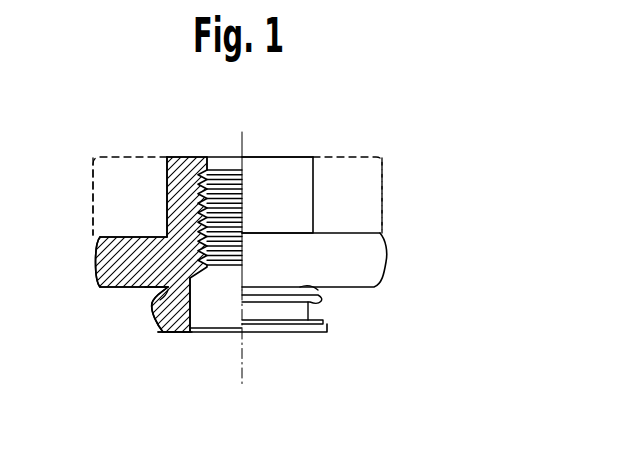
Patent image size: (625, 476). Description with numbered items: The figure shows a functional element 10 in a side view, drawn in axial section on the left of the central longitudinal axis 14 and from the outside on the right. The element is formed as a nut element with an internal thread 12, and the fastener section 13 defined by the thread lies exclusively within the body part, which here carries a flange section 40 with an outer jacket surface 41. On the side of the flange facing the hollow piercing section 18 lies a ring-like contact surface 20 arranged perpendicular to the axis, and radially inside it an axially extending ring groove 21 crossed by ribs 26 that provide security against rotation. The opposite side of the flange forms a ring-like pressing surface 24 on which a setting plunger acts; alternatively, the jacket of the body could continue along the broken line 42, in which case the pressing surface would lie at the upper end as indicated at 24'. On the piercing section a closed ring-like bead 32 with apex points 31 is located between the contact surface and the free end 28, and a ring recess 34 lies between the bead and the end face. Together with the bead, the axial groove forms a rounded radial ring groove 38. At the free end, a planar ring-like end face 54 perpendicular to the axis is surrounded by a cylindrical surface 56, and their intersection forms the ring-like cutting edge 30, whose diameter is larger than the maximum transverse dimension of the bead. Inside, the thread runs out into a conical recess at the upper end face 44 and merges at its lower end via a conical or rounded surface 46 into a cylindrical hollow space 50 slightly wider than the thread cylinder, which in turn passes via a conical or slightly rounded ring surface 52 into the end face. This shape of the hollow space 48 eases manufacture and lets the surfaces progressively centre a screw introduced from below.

The functional element 10 is at (296, 150).
The thread 12 is at (238, 198).
The fastener section 13 is at (178, 156).
The longitudinal axis 14 is at (244, 138).
The piercing section 18 is at (330, 325).
The ring-like contact surface 20 is at (108, 290).
The ring groove 21 is at (100, 260).
The ring-like pressing surface 24 is at (97, 212).
The ring-like pressing surface 24' is at (255, 147).
The ribs 26 is at (150, 284).
The free end 28 is at (305, 335).
The ring-like cutting edge 30 is at (158, 334).
The apex points 31 is at (327, 290).
The ring-like bead 32 is at (306, 286).
The ring recess 34 is at (313, 307).
The radial ring groove 38 is at (170, 266).
The flange section 40 is at (374, 233).
The jacket surface 41 is at (389, 260).
The broken line 42 is at (100, 156).
The upper end face 44 is at (206, 156).
The conical or rounded surface 46 is at (197, 274).
The hollow space 48 is at (233, 273).
The cylindrical hollow space 50 is at (199, 300).
The ring surface 52 is at (188, 336).
The ring-like end face 54 is at (173, 334).
The cylindrical surface 56 is at (158, 330).